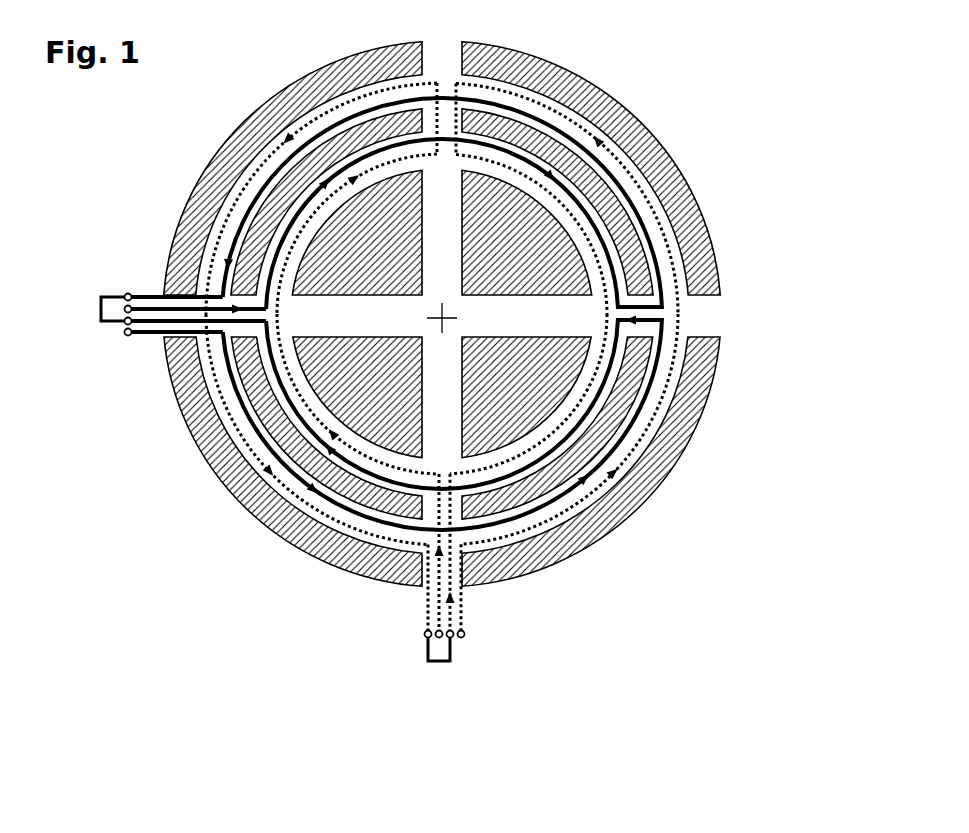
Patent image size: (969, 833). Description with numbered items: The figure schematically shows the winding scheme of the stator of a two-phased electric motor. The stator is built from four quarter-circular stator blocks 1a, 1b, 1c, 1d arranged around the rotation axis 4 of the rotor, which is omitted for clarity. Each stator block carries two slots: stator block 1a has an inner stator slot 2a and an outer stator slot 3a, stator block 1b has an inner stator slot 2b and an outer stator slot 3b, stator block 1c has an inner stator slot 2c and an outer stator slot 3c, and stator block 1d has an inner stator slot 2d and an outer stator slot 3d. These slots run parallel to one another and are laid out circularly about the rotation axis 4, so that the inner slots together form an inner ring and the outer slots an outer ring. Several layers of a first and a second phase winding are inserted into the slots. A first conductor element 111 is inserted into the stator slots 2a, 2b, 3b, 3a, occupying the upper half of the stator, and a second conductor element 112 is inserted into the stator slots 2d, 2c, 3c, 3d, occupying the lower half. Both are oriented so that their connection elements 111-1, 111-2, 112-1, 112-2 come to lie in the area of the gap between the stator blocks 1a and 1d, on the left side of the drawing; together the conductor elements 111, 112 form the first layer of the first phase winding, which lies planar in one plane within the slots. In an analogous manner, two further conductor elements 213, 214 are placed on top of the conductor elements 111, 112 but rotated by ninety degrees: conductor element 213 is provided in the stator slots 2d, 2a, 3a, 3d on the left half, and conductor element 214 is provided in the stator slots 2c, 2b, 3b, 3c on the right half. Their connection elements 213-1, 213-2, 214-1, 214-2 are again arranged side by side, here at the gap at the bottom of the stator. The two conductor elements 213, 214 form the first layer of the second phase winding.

The stator block 1a is at (243, 95).
The stator block 1b is at (667, 122).
The stator block 1c is at (650, 528).
The stator block 1d is at (225, 526).
The inner stator slot 2a is at (262, 229).
The inner stator slot 2b is at (640, 240).
The inner stator slot 2c is at (527, 490).
The inner stator slot 2d is at (262, 446).
The outer stator slot 3a is at (200, 180).
The outer stator slot 3b is at (665, 186).
The outer stator slot 3c is at (682, 405).
The outer stator slot 3d is at (305, 540).
The rotation axis 4 is at (458, 318).
The first conductor element 111 is at (165, 292).
The connection element 111-1 is at (125, 296).
The connection element 111-2 is at (124, 310).
The second conductor element 112 is at (200, 460).
The connection element 112-1 is at (126, 335).
The connection element 112-2 is at (125, 322).
The conductor element 213 is at (395, 548).
The connection element 213-1 is at (427, 637).
The connection element 213-2 is at (439, 638).
The conductor element 214 is at (502, 545).
The connection element 214-1 is at (463, 637).
The connection element 214-2 is at (452, 640).